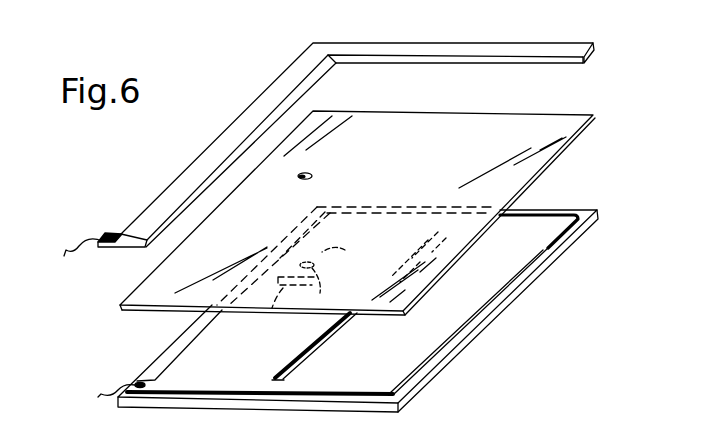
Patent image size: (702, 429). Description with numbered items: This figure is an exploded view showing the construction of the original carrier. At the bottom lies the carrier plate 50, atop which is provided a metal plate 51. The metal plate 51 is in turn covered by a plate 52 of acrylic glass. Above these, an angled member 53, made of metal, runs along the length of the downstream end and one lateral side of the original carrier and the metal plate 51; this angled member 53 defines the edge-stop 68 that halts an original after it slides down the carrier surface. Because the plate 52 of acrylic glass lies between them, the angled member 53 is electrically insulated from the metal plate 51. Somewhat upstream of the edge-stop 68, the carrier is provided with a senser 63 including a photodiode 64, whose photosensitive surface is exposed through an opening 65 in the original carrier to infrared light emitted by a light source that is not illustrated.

The carrier plate 50 is at (569, 242).
The metal plate 51 is at (551, 211).
The plate of acrylic glass 52 is at (578, 117).
The angled member 53 is at (558, 52).
The senser 63 is at (277, 312).
The photodiode 64 is at (319, 293).
The opening 65 is at (314, 173).
The edge-stop 68 is at (190, 204).